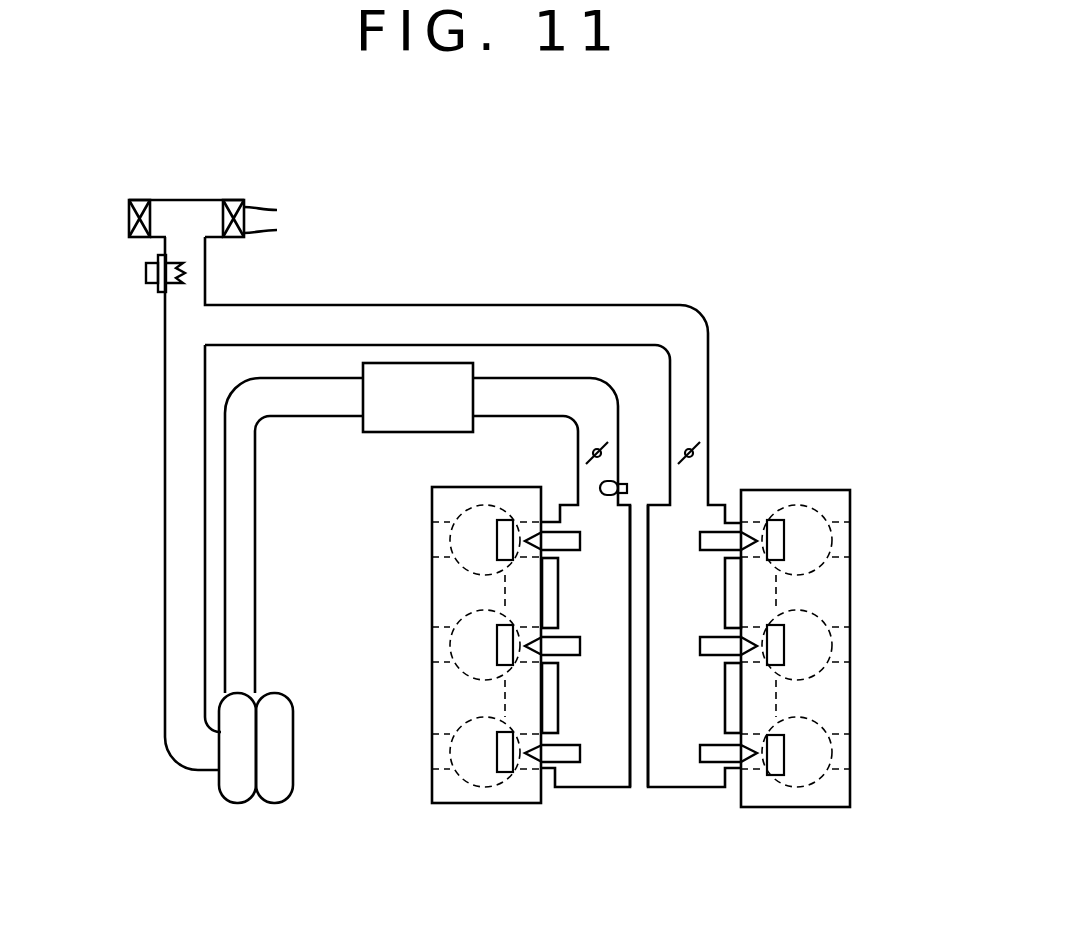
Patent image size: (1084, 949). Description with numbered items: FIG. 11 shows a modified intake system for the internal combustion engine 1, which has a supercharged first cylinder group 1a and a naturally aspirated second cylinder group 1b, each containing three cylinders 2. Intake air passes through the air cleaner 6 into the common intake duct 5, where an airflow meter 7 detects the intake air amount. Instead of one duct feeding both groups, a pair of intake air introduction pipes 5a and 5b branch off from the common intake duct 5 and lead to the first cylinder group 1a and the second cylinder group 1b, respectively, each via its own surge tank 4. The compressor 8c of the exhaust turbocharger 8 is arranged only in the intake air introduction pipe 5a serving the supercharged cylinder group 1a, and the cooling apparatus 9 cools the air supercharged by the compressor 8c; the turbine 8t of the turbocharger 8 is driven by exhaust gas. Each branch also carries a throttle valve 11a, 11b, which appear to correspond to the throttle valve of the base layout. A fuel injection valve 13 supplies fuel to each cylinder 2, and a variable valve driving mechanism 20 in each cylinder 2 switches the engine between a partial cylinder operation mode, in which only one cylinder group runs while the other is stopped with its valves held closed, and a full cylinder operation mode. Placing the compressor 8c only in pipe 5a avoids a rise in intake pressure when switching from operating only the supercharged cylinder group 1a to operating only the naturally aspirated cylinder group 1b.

The internal combustion engine 1 is at (836, 402).
The first cylinder group 1a is at (460, 803).
The second cylinder group 1b is at (817, 807).
The cylinder 2 is at (487, 505).
The surge tank 4 is at (575, 788).
The intake duct 5 is at (206, 290).
The intake air introduction pipe 5a is at (257, 515).
The intake air introduction pipe 5b is at (528, 306).
The air cleaner 6 is at (216, 201).
The airflow meter 7 is at (146, 274).
The exhaust turbocharger 8 is at (198, 785).
The compressor 8c is at (232, 803).
The turbine 8t is at (270, 803).
The cooling apparatus 9 is at (388, 433).
The shutoff valve 11a is at (591, 453).
The shutoff valve 11b is at (696, 450).
The fuel injection valve 13 is at (700, 753).
The variable valve driving mechanism 20 is at (497, 777).